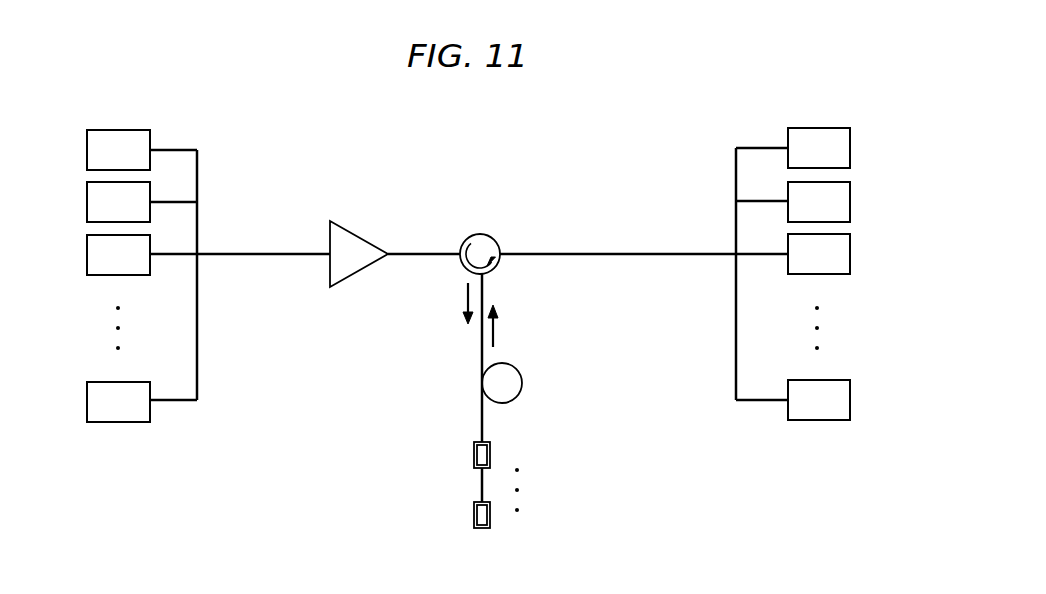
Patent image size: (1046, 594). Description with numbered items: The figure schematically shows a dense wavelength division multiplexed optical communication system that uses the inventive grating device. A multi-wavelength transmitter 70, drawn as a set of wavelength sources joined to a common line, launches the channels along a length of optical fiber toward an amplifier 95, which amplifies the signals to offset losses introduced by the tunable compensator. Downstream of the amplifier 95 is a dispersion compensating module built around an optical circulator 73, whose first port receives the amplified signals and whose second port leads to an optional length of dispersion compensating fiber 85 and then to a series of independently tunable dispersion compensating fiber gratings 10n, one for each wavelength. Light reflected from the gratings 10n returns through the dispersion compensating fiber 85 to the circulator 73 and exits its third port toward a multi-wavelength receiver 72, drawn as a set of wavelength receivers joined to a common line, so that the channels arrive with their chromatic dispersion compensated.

The multi-wavelength transmitter 70 is at (198, 332).
The multi-wavelength receiver 72 is at (753, 402).
The optical circulator 73 is at (477, 235).
The dispersion compensating fiber 85 is at (522, 385).
The amplifier 95 is at (362, 237).
The tunable dispersion-compensating fiber gratings 10n is at (458, 485).